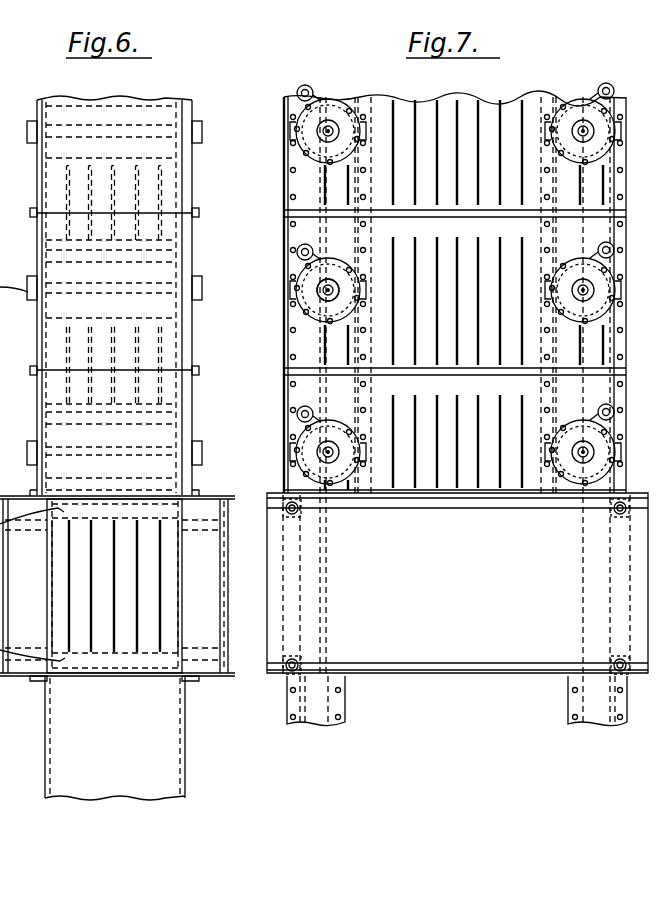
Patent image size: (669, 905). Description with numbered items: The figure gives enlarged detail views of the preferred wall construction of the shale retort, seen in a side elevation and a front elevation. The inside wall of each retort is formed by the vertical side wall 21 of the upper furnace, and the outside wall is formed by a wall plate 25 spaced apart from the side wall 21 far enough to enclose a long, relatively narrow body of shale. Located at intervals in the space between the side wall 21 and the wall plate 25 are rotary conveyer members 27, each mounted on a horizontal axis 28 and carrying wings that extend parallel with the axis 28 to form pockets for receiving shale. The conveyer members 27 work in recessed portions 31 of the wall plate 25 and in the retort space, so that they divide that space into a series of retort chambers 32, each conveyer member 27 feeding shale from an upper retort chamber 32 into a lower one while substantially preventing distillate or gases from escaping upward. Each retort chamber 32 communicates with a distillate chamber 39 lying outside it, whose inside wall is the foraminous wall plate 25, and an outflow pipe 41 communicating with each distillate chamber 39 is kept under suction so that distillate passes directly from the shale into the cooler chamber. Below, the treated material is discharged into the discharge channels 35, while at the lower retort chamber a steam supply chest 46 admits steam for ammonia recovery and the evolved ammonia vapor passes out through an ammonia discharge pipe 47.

In FIG. 7, the side wall of the upper furnace 21 is at (330, 207).
In FIG. 7, the wall plate 25 is at (335, 160).
In FIG. 6, the rotary conveyer member 27 is at (135, 462).
In FIG. 6, the horizontal axis 28 is at (200, 448).
In FIG. 7, the horizontal axis 28 is at (323, 293).
In FIG. 7, the recessed portion 31 is at (340, 128).
In FIG. 7, the retort chamber 32 is at (330, 183).
In FIG. 6, the discharge channel 35 is at (115, 738).
In FIG. 7, the distillate chamber 39 is at (305, 232).
In FIG. 7, the outflow pipe 41 is at (300, 93).
In FIG. 7, the steam supply chest 46 is at (287, 673).
In FIG. 7, the ammonia discharge pipe 47 is at (284, 512).